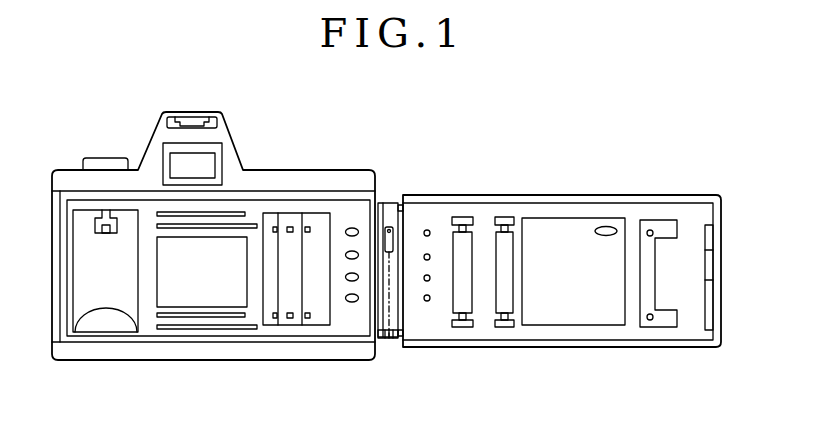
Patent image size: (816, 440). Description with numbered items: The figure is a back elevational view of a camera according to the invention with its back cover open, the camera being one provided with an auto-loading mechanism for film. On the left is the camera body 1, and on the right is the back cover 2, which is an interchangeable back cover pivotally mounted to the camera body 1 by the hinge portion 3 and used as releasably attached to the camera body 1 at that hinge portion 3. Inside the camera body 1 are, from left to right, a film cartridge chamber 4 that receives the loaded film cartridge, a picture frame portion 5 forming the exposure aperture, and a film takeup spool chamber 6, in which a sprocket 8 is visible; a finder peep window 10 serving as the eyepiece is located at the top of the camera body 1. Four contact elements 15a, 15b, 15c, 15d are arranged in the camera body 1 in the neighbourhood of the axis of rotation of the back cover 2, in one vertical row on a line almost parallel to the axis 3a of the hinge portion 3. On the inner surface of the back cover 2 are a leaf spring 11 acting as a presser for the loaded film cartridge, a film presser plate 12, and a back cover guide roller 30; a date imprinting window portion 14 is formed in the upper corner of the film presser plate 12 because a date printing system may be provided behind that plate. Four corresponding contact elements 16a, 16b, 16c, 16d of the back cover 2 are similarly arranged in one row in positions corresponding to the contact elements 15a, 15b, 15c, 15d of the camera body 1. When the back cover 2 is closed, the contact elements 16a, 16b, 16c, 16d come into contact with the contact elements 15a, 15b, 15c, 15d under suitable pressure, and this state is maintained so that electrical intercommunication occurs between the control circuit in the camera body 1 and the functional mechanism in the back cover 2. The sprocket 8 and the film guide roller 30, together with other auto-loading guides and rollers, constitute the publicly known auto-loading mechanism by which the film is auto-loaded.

The camera body 1 is at (222, 350).
The back cover 2 is at (595, 348).
The hinge portion 3 is at (380, 337).
The axis of the hinge portion 3a is at (389, 340).
The film cartridge chamber 4 is at (88, 247).
The picture frame portion 5 is at (168, 292).
The film takeup spool chamber 6 is at (268, 258).
The sprocket 8 is at (283, 285).
The finder peep window 10 is at (204, 165).
The leaf spring 11 is at (666, 225).
The film presser plate 12 is at (552, 233).
The date imprinting window portion 14 is at (607, 226).
The contact element 15a is at (353, 300).
The contact element 15b is at (345, 278).
The contact element 15c is at (347, 252).
The contact element 15d is at (353, 227).
The contact element 16a is at (427, 301).
The contact element 16b is at (428, 281).
The contact element 16c is at (424, 256).
The contact element 16d is at (429, 230).
The back cover guide roller 30 is at (467, 250).